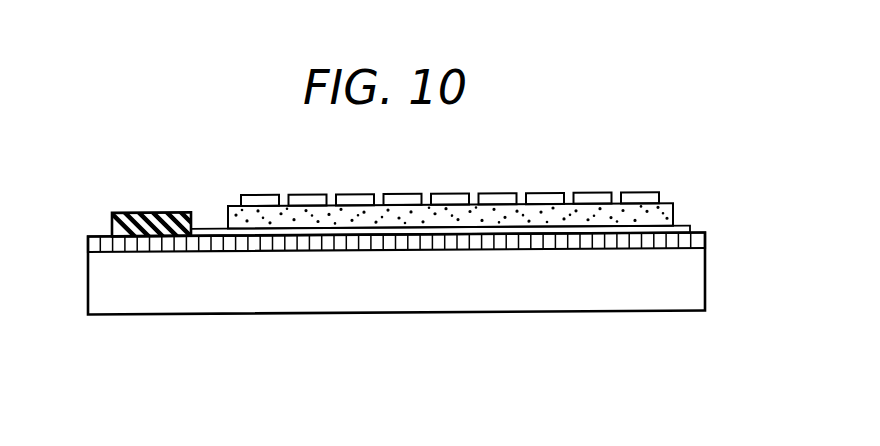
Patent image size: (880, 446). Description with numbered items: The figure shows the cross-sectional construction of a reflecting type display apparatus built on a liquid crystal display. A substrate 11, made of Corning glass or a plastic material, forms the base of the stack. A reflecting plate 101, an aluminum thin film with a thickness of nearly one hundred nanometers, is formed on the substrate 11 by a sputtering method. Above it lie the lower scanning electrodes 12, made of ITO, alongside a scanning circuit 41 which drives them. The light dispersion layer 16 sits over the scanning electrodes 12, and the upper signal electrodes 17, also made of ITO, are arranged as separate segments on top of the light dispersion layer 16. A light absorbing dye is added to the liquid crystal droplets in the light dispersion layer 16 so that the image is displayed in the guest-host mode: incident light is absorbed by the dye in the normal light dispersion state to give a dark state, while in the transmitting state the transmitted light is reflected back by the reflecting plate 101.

The substrate 11 is at (705, 265).
The lower scanning electrodes 12 is at (688, 228).
The reflecting plate 101 is at (312, 254).
The scanning circuit 41 is at (113, 212).
The light dispersion layer 16 is at (436, 210).
The upper signal electrodes 17 is at (316, 195).